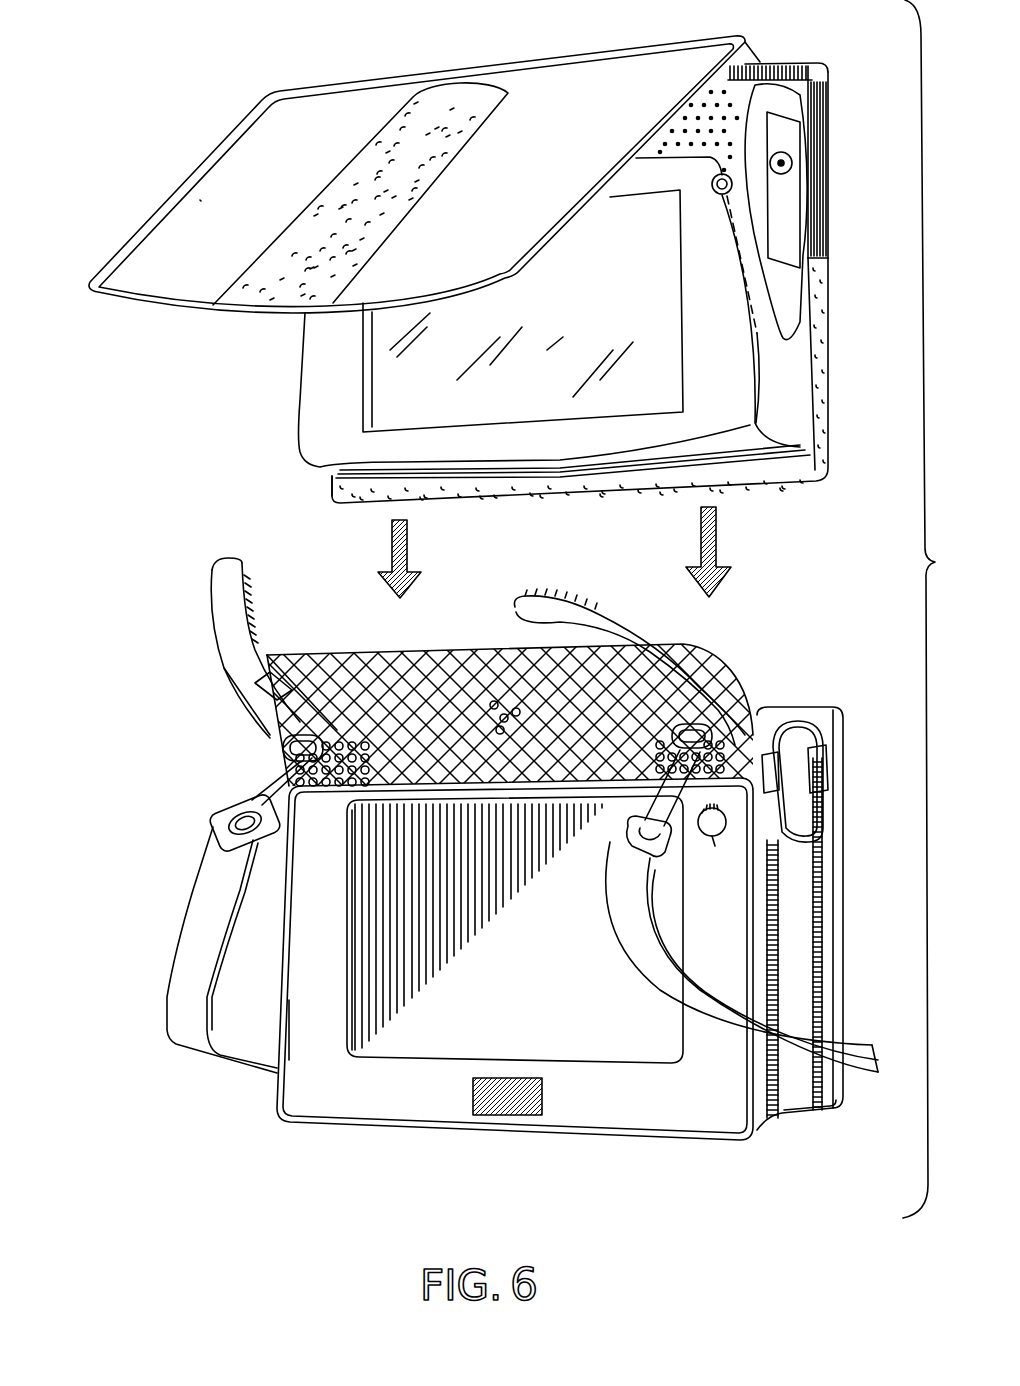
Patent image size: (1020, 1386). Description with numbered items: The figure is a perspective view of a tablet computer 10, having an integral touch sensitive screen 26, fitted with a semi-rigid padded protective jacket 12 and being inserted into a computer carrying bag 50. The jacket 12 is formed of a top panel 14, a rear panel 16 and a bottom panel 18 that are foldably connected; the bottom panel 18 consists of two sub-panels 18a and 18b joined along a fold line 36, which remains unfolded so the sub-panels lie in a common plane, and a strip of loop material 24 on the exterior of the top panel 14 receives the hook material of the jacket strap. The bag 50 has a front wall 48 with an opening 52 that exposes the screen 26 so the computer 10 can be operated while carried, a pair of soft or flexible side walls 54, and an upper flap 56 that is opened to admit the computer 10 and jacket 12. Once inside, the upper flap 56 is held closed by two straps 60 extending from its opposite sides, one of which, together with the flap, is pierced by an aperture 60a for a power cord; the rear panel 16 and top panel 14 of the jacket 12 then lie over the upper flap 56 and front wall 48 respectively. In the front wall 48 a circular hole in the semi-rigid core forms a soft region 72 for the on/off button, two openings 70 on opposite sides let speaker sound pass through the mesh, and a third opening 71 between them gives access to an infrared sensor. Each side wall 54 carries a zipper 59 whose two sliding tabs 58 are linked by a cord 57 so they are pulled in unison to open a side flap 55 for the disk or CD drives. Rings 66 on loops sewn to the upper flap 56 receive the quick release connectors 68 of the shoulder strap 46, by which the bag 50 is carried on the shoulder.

The tablet computer 10 is at (787, 413).
The protective jacket 12 is at (575, 85).
The top panel 14 is at (333, 130).
The rear panel 16 is at (752, 55).
The bottom panel 18 is at (820, 296).
The sub-panel 18a is at (818, 368).
The sub-panel 18b is at (810, 147).
The strip of loop material 24 is at (467, 157).
The touch sensitive screen 26 is at (578, 350).
The fold line 36 is at (820, 252).
The shoulder strap 46 is at (213, 1013).
The front wall 48 is at (700, 1118).
The computer carrying bag 50 is at (380, 1104).
The opening 52 is at (620, 1050).
The side walls 54 is at (510, 1118).
The side flap 55 is at (787, 1097).
The upper flap 56 is at (378, 652).
The cord 57 is at (803, 823).
The sliding tabs 58 is at (824, 772).
The zipper 59 is at (828, 990).
The straps 60 is at (228, 582).
The aperture 60a is at (263, 660).
The rings 66 is at (283, 738).
The quick release connectors 68 is at (283, 762).
The openings 70 is at (318, 784).
The third opening 71 is at (460, 673).
The soft region 72 is at (714, 840).